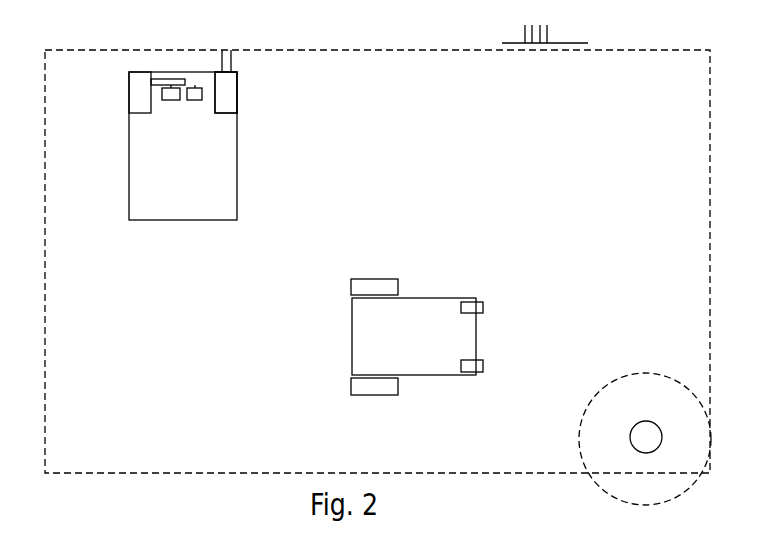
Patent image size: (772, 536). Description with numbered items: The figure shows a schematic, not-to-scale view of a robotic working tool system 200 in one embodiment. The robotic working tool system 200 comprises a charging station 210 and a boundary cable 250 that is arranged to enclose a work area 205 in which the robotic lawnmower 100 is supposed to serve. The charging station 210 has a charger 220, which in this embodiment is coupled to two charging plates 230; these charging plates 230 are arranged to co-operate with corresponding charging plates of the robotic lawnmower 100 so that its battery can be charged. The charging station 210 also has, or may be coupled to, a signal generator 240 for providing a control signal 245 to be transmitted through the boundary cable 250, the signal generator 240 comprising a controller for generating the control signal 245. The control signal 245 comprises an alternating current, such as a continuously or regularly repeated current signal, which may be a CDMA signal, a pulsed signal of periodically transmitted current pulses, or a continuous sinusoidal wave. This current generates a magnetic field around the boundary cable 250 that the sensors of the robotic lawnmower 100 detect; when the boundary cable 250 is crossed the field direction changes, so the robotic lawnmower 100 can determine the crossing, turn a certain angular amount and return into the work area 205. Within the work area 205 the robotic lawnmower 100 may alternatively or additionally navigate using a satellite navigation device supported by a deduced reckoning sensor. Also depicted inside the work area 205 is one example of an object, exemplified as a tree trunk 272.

The robotic lawnmower 100 is at (402, 377).
The robotic working tool system 200 is at (128, 65).
The work area 205 is at (437, 228).
The charging station 210 is at (130, 113).
The charger 220 is at (137, 80).
The charging plates 230 is at (198, 82).
The signal generator 240 is at (238, 100).
The control signal 245 is at (545, 33).
The boundary cable 250 is at (112, 474).
The tree trunk 272 is at (646, 437).